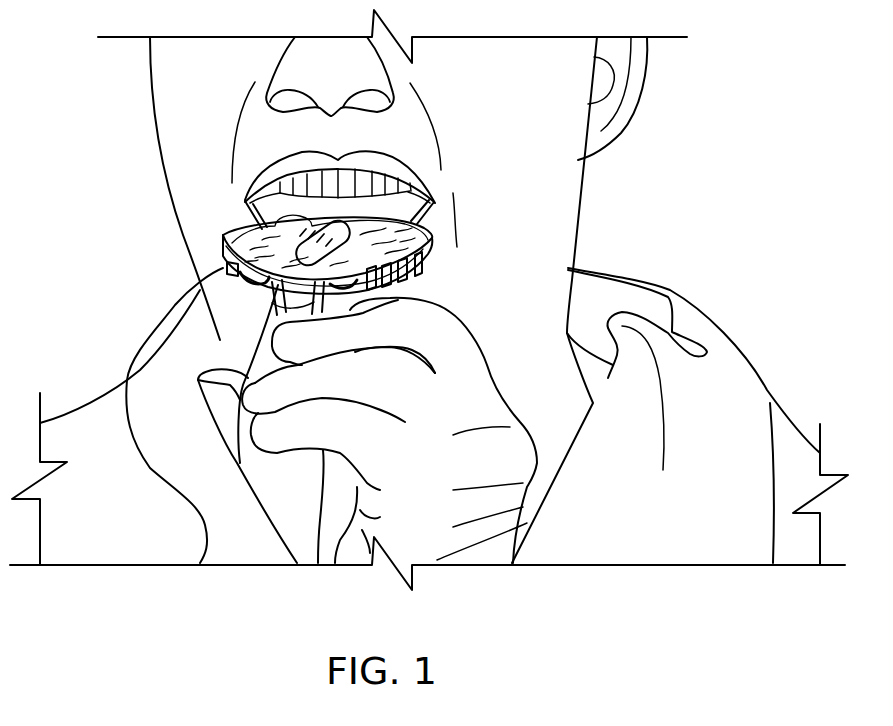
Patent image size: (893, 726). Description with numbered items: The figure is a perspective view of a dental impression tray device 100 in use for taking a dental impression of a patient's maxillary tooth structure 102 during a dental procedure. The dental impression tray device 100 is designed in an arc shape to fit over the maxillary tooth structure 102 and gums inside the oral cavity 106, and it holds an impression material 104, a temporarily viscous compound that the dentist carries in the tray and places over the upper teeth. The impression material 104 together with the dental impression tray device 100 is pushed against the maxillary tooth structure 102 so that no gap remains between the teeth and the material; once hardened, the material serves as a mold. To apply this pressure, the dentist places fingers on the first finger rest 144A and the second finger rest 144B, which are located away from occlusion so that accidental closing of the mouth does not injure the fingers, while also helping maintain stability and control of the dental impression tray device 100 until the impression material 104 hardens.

The dental impression tray device 100 is at (396, 264).
The maxillary tooth structure 102 is at (242, 178).
The impression material 104 is at (223, 230).
The oral cavity 106 is at (389, 206).
The first finger rest 144A is at (223, 268).
The second finger rest 144B is at (444, 263).